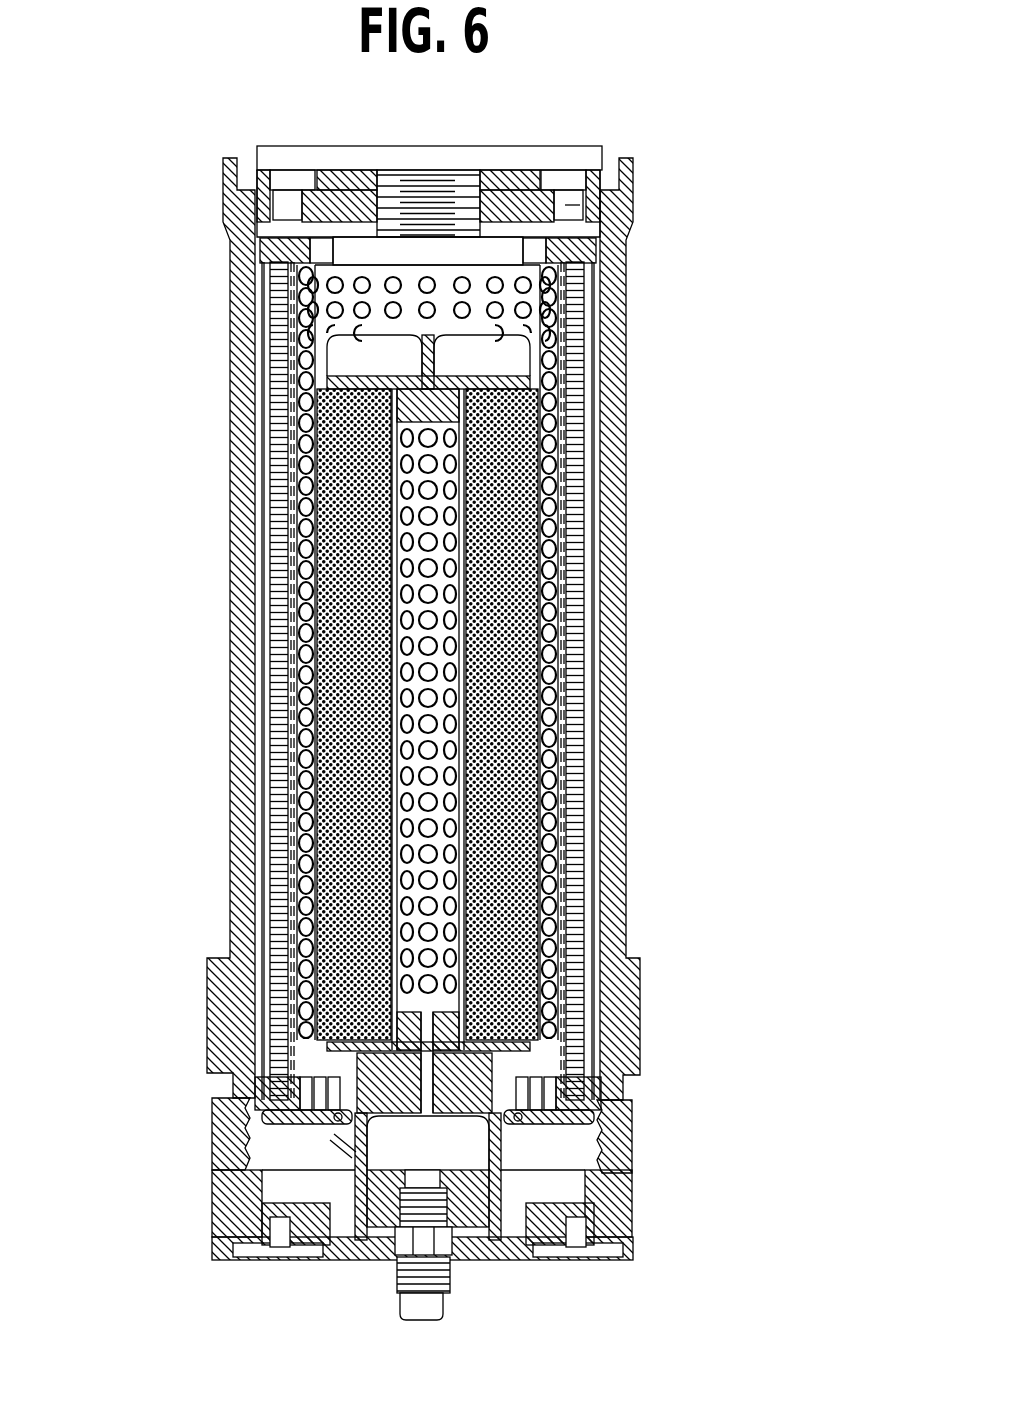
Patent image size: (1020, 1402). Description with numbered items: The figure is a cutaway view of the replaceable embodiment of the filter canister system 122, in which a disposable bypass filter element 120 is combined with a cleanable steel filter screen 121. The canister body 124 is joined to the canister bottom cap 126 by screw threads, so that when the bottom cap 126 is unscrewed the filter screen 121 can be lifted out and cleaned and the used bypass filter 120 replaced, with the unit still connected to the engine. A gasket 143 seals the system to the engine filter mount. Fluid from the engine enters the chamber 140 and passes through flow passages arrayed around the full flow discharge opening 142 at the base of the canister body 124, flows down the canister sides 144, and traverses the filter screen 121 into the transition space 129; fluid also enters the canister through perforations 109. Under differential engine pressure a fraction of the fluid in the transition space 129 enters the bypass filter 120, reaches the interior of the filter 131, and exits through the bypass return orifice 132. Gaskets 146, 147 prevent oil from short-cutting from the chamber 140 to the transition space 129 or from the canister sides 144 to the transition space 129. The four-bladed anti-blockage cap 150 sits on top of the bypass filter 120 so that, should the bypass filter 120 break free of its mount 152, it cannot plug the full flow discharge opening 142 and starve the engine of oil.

The filter canister system 122 is at (205, 562).
The canister body 124 is at (626, 432).
The gasket 143 is at (607, 153).
The chamber 140 is at (615, 218).
The full flow discharge opening 142 is at (440, 188).
The gasket 146 is at (598, 270).
The canister sides 144 is at (593, 493).
The perforations 109 is at (575, 573).
The cleanable filter screen 121 is at (570, 643).
The transition space 129 is at (530, 863).
The four-bladed anti-blockage cap 150 is at (555, 378).
The bypass filter element 120 is at (510, 692).
The interior of the filter 131 is at (438, 790).
The mount 152 is at (580, 1042).
The gasket 147 is at (615, 1090).
The canister bottom cap 126 is at (635, 1182).
The bypass return orifice 132 is at (422, 1117).